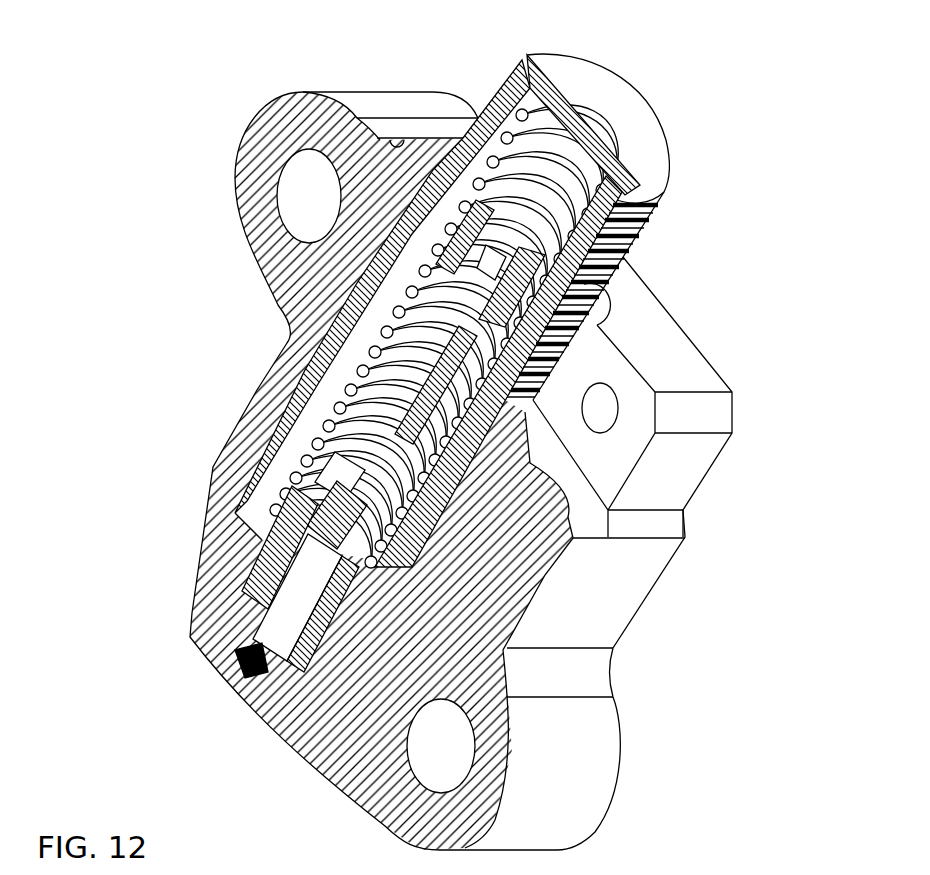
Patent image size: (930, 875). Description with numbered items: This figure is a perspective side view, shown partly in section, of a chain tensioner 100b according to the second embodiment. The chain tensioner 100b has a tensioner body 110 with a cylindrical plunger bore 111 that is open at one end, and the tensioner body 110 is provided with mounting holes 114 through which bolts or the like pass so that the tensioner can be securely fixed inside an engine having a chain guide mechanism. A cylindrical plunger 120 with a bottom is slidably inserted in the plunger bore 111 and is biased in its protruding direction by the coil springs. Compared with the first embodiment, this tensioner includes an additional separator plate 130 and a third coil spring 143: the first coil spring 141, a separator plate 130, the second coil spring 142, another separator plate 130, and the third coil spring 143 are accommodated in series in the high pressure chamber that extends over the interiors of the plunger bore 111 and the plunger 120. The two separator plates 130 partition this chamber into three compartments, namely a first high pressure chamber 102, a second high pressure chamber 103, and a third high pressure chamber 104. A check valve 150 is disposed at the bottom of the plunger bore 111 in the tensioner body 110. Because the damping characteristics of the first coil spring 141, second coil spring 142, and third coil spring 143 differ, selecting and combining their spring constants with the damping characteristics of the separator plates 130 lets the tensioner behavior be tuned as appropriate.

The chain tensioner 100b is at (200, 90).
The third high pressure chamber 104 is at (497, 108).
The plunger 120 is at (620, 118).
The third coil spring 143 is at (625, 183).
The separator plate 130 is at (585, 252).
The second high pressure chamber 103 is at (560, 302).
The second coil spring 142 is at (545, 358).
The tensioner body 110 is at (697, 423).
The mounting holes 114 is at (287, 186).
The first high pressure chamber 102 is at (362, 428).
The first coil spring 141 is at (308, 450).
The plunger bore 111 is at (248, 484).
The check valve 150 is at (260, 538).